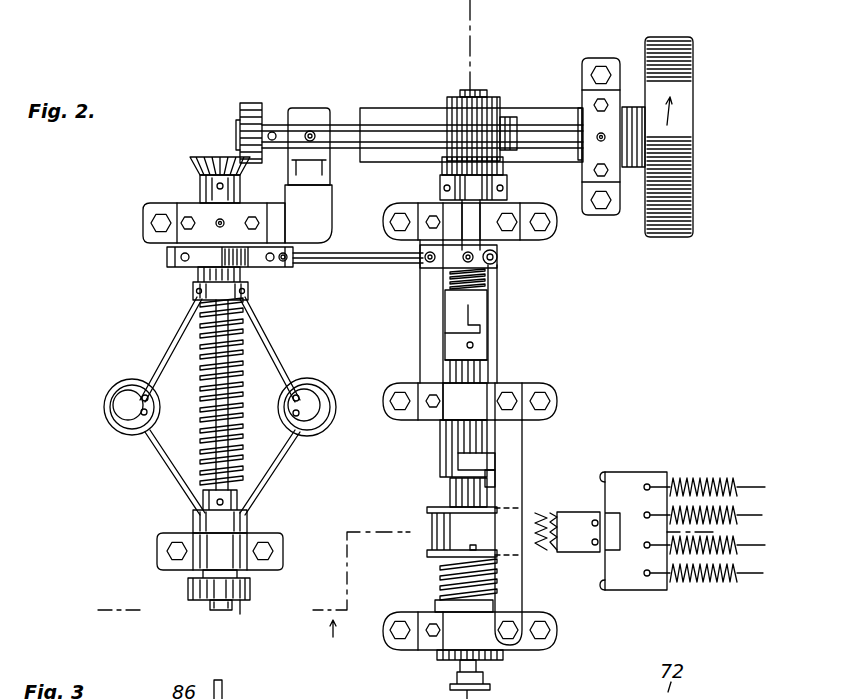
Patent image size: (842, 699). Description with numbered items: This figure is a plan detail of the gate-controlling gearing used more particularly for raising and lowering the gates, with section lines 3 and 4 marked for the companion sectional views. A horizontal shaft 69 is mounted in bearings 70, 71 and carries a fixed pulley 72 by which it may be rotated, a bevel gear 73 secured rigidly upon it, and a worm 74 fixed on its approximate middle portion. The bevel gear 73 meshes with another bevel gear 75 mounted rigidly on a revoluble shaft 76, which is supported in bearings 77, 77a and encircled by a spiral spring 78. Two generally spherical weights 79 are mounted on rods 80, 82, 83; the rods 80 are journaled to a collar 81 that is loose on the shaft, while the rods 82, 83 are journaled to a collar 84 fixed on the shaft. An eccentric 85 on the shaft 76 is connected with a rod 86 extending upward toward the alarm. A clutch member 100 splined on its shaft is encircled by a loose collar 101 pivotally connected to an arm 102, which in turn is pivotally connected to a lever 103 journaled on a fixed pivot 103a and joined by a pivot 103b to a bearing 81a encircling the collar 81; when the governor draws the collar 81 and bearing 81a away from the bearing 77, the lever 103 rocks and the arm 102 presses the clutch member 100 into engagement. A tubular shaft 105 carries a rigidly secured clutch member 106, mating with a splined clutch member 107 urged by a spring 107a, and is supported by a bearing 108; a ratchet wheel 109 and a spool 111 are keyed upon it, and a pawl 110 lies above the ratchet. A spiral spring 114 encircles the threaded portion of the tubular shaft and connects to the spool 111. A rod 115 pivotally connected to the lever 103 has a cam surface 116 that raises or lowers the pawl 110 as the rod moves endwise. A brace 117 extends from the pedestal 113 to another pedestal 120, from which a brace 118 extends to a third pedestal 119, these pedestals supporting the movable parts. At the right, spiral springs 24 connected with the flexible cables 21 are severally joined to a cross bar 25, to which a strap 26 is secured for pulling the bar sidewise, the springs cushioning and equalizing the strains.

The section line 3- 3 is at (413, 577).
The section line 4- 4 is at (469, 45).
The flexible cables 21 is at (748, 483).
The spiral springs 24 is at (700, 480).
The cross bar 25 is at (633, 531).
The strap 26 is at (532, 527).
The horizontal shaft 69 is at (350, 128).
The bearing 70 is at (310, 108).
The bearing 71 is at (592, 115).
The fixed pulley 72 is at (653, 71).
The bevel gear 73 is at (250, 104).
The worm 74 is at (450, 105).
The bevel gear 75 is at (192, 163).
The revoluble shaft 76 is at (206, 390).
The bearing 77 is at (200, 211).
The bearing 77a is at (200, 555).
The spiral spring 78 is at (210, 421).
The weights 79 is at (120, 396).
The rods 80 is at (165, 348).
The collar 81 is at (195, 292).
The bearing 81a is at (215, 258).
The rod 82 is at (180, 486).
The rod 83 is at (270, 477).
The collar 84 is at (195, 524).
The eccentric 85 is at (232, 620).
The rod 86 is at (205, 589).
The clutch member 100 is at (443, 165).
The collar 101 is at (440, 185).
The arm 102 is at (470, 231).
The lever 103 is at (358, 266).
The fixed pivot 103a is at (425, 262).
The pivot 103b is at (305, 262).
The tubular shaft 105 is at (465, 497).
The clutch member 106 is at (478, 334).
The clutch member 107 is at (470, 304).
The spring 107a is at (496, 270).
The bearing 108 is at (500, 385).
The ratchet wheel 109 is at (450, 442).
The pawl 110 is at (482, 462).
The spool 111 is at (432, 507).
The pedestal 113 is at (447, 638).
The spiral spring 114 is at (445, 583).
The rod 115 is at (497, 327).
The cam surface 116 is at (490, 480).
The brace 117 is at (512, 592).
The brace 118 is at (430, 318).
The pedestal 119 is at (493, 215).
The pedestal 120 is at (452, 395).